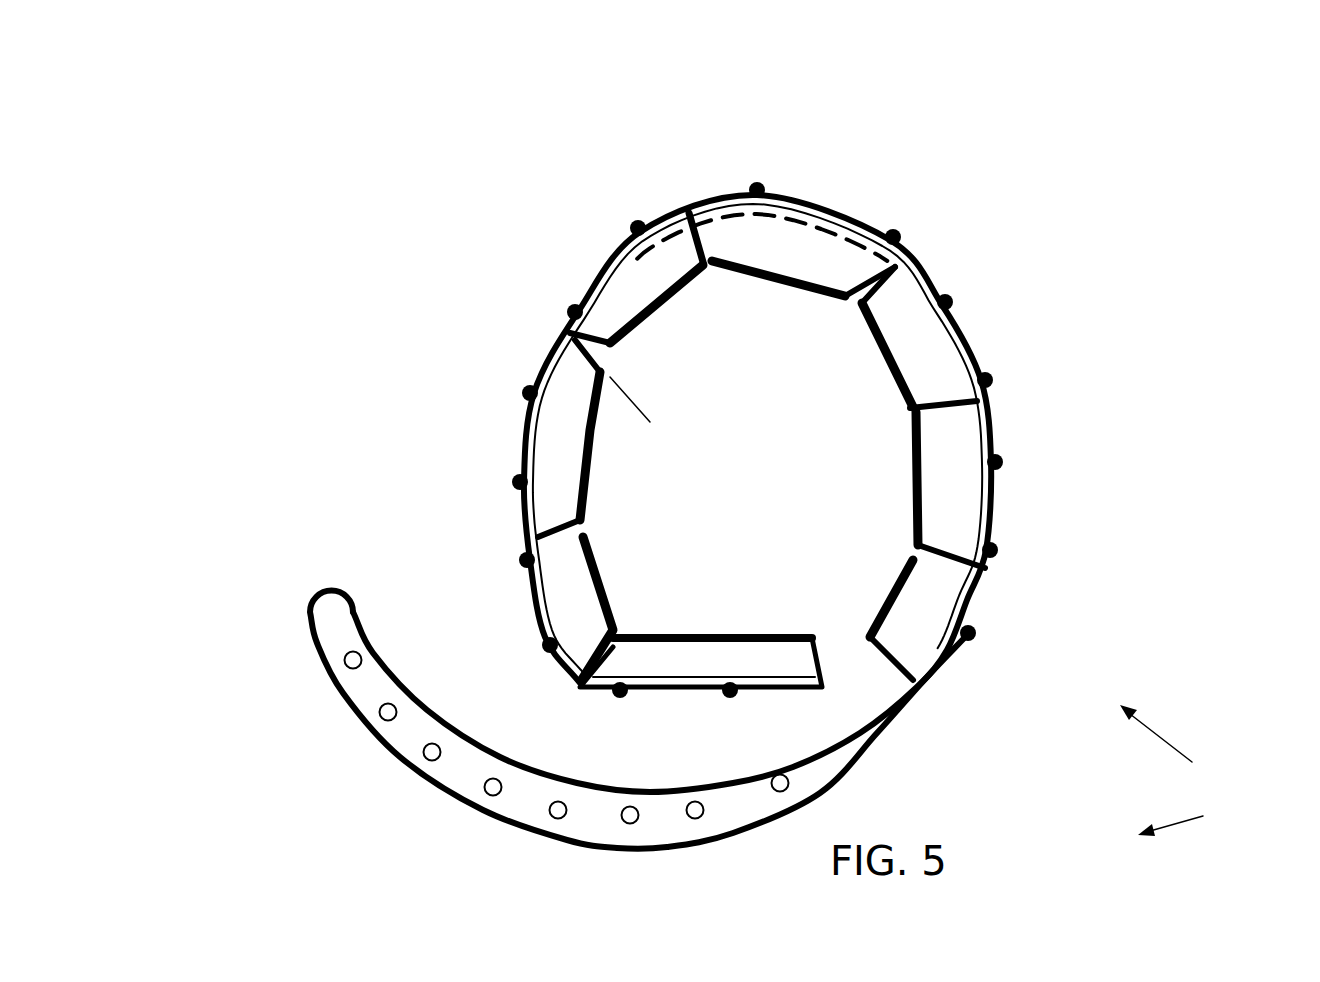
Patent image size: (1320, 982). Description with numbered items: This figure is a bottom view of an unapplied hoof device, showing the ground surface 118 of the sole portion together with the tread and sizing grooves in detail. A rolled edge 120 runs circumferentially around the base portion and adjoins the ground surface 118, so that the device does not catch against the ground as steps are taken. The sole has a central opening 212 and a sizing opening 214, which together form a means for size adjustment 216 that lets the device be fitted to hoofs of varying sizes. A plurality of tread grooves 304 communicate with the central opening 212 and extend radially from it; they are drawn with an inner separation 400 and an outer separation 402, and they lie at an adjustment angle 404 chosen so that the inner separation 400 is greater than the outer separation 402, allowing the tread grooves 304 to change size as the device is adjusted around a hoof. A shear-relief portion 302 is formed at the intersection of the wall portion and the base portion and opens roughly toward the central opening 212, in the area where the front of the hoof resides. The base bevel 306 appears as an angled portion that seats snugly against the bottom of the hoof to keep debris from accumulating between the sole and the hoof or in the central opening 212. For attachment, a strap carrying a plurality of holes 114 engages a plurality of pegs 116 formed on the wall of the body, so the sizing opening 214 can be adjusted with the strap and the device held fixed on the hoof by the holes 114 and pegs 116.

The holes 114 is at (387, 712).
The pegs 116 is at (997, 462).
The ground surface 118 is at (578, 605).
The rolled edge 120 is at (955, 350).
The central opening 212 is at (843, 492).
The sizing opening 214 is at (840, 660).
The means for size adjustment 216 is at (1192, 809).
The shear-relief portion 302 is at (857, 217).
The tread grooves 304 is at (683, 368).
The base bevel 306 is at (578, 470).
The inner separation 400 is at (710, 258).
The outer separation 402 is at (686, 212).
The adjustment angle 404 is at (664, 375).